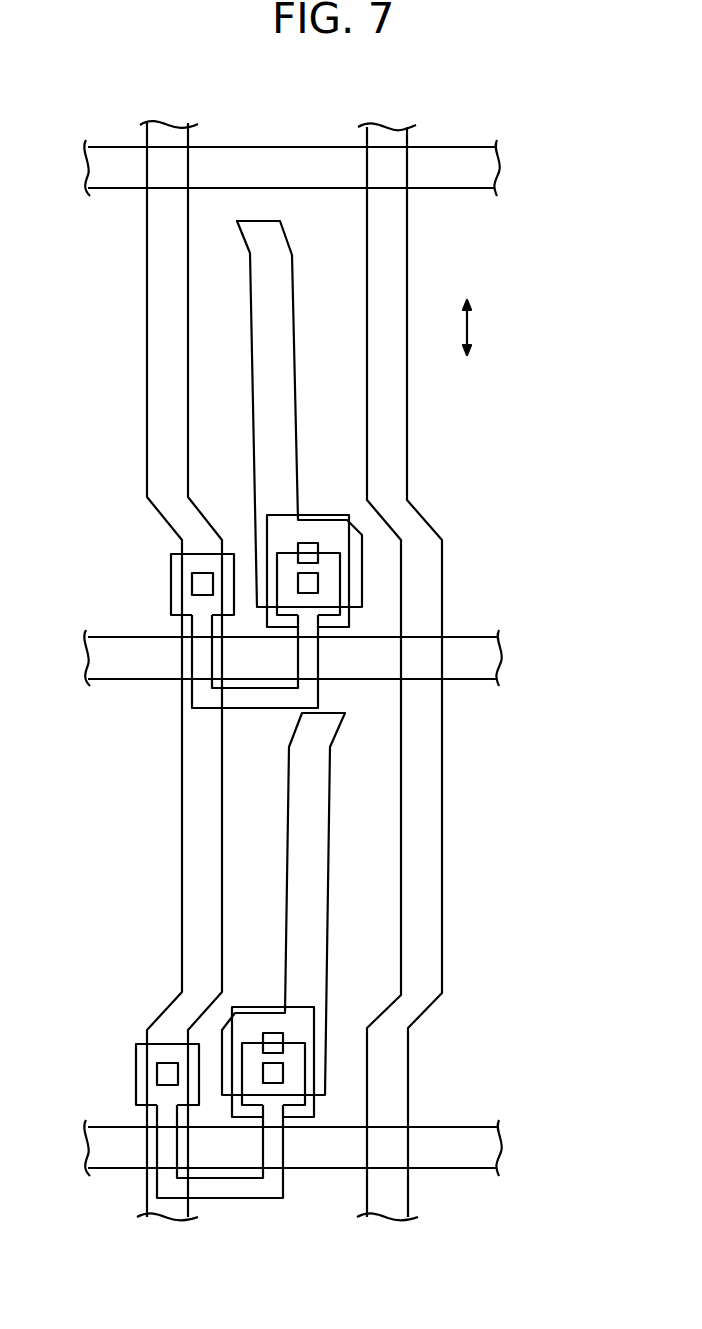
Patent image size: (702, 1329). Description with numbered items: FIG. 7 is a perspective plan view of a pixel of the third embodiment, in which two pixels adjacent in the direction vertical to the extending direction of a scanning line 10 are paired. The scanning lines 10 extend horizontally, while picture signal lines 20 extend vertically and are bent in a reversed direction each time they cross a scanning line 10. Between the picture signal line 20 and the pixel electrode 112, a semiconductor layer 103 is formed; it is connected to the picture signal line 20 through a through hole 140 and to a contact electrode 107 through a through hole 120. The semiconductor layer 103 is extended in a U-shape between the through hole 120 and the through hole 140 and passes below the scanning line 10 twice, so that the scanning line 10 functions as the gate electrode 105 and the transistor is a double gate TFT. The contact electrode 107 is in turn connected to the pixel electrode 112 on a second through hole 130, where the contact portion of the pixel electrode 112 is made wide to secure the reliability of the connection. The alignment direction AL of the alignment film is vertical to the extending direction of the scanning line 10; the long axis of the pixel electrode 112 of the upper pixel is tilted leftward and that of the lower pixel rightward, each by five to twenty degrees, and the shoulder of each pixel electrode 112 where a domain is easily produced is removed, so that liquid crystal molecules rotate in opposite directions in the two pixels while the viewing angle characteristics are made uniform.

The scanning line 10 is at (500, 170).
The picture signal line 20 is at (387, 127).
The semiconductor layer 103 is at (250, 708).
The gate electrode 105 is at (340, 658).
The contact electrode 107 is at (350, 619).
The pixel electrode 112 is at (282, 395).
The through hole 120 is at (312, 583).
The second through hole 130 is at (312, 550).
The through hole 140 is at (198, 583).
The alignment direction AL is at (470, 325).